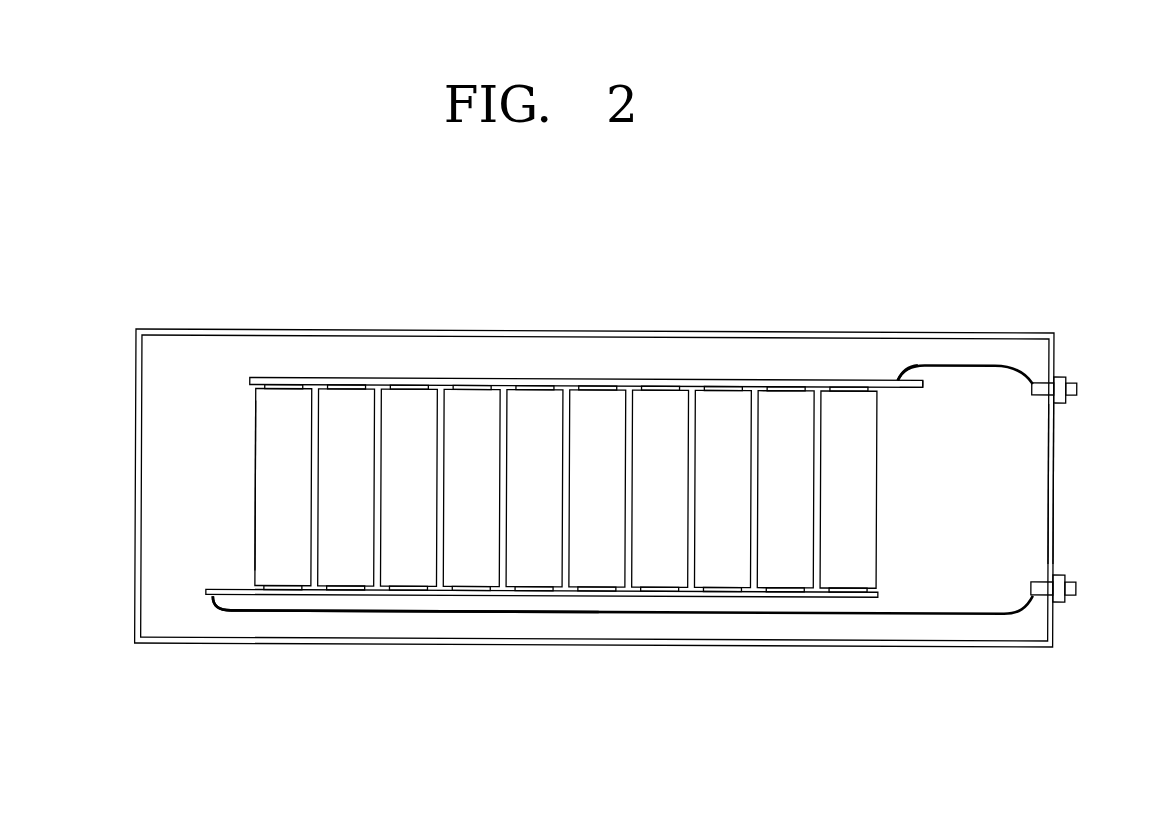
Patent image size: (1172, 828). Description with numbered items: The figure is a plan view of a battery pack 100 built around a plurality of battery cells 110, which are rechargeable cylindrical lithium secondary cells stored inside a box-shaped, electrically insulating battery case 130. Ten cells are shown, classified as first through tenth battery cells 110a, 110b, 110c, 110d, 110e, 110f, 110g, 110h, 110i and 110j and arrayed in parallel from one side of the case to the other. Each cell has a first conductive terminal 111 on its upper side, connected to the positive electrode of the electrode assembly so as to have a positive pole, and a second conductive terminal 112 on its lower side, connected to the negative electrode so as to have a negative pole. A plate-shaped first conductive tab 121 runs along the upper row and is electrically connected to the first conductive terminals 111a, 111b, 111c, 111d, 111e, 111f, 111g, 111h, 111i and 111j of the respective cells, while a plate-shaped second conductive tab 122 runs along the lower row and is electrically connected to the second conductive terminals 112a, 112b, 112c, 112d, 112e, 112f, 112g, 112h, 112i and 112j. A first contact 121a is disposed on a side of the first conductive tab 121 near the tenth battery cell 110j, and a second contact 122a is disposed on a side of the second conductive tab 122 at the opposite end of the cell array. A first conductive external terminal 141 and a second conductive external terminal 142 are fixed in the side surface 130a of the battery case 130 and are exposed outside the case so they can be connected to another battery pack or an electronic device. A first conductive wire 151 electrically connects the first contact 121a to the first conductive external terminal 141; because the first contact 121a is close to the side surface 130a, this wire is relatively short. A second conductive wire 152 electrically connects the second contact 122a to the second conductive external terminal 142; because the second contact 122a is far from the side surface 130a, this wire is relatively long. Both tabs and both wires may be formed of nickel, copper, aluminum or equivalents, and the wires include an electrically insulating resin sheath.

The battery pack 100 is at (52, 248).
The battery cells 110 is at (255, 454).
The first battery cell 110a is at (283, 487).
The second battery cell 110b is at (346, 487).
The third battery cell 110c is at (408, 487).
The fourth battery cell 110d is at (471, 487).
The fifth battery cell 110e is at (534, 488).
The sixth battery cell 110f is at (597, 488).
The seventh battery cell 110g is at (660, 488).
The eighth battery cell 110h is at (722, 488).
The ninth battery cell 110i is at (785, 489).
The tenth battery cell 110j is at (848, 489).
The first conductive terminal 111 is at (250, 389).
The first conductive terminal of the first battery cell 111a is at (286, 383).
The first conductive terminal of the second battery cell 111b is at (349, 383).
The first conductive terminal of the third battery cell 111c is at (411, 383).
The first conductive terminal of the fourth battery cell 111d is at (474, 383).
The first conductive terminal of the fifth battery cell 111e is at (536, 383).
The first conductive terminal of the sixth battery cell 111f is at (599, 383).
The first conductive terminal of the seventh battery cell 111g is at (662, 383).
The first conductive terminal of the eighth battery cell 111h is at (724, 383).
The first conductive terminal of the ninth battery cell 111i is at (787, 383).
The first conductive terminal of the tenth battery cell 111j is at (849, 383).
The second conductive terminal 112 is at (255, 584).
The second conductive terminal of the first battery cell 112a is at (283, 590).
The second conductive terminal of the second battery cell 112b is at (346, 590).
The second conductive terminal of the third battery cell 112c is at (408, 590).
The second conductive terminal of the fourth battery cell 112d is at (471, 590).
The second conductive terminal of the fifth battery cell 112e is at (533, 590).
The second conductive terminal of the sixth battery cell 112f is at (596, 590).
The second conductive terminal of the seventh battery cell 112g is at (659, 590).
The second conductive terminal of the eighth battery cell 112h is at (721, 590).
The second conductive terminal of the ninth battery cell 112i is at (784, 590).
The second conductive terminal of the tenth battery cell 112j is at (846, 590).
The first conductive tab 121 is at (912, 387).
The first contact 121a is at (898, 374).
The second conductive tab 122 is at (874, 612).
The second contact 122a is at (229, 612).
The battery case 130 is at (197, 328).
The side surface of the battery case 130a is at (1056, 430).
The first conductive external terminal 141 is at (1063, 372).
The second conductive external terminal 142 is at (1060, 571).
The first conductive wire 151 is at (994, 361).
The second conductive wire 152 is at (983, 612).